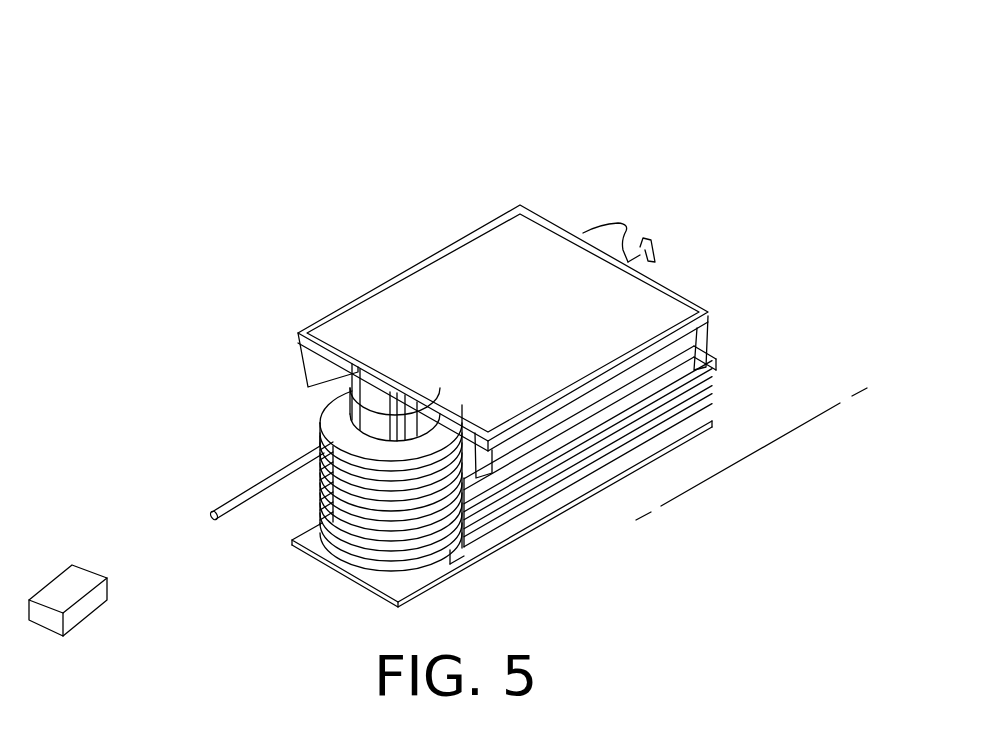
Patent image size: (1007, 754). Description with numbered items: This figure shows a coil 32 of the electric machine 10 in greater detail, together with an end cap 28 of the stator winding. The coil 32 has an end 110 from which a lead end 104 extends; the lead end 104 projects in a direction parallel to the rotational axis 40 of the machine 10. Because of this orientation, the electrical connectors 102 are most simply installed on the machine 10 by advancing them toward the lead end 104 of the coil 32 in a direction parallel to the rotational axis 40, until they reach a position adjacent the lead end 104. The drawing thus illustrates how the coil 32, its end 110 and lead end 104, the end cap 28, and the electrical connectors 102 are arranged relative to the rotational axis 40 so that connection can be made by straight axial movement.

The machine 10 is at (757, 93).
The top plate 28 is at (629, 115).
The coil 32 is at (294, 423).
The rotational axis 40 is at (788, 432).
The electrical connectors 102 is at (83, 618).
The lead end 104 is at (242, 494).
The end 110 is at (321, 440).